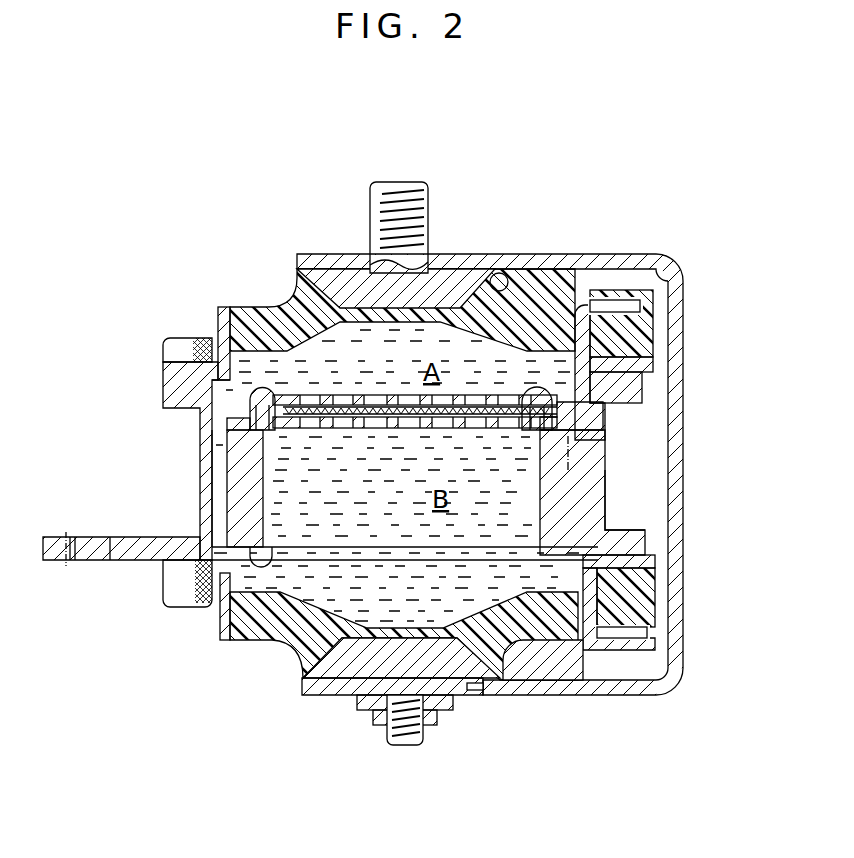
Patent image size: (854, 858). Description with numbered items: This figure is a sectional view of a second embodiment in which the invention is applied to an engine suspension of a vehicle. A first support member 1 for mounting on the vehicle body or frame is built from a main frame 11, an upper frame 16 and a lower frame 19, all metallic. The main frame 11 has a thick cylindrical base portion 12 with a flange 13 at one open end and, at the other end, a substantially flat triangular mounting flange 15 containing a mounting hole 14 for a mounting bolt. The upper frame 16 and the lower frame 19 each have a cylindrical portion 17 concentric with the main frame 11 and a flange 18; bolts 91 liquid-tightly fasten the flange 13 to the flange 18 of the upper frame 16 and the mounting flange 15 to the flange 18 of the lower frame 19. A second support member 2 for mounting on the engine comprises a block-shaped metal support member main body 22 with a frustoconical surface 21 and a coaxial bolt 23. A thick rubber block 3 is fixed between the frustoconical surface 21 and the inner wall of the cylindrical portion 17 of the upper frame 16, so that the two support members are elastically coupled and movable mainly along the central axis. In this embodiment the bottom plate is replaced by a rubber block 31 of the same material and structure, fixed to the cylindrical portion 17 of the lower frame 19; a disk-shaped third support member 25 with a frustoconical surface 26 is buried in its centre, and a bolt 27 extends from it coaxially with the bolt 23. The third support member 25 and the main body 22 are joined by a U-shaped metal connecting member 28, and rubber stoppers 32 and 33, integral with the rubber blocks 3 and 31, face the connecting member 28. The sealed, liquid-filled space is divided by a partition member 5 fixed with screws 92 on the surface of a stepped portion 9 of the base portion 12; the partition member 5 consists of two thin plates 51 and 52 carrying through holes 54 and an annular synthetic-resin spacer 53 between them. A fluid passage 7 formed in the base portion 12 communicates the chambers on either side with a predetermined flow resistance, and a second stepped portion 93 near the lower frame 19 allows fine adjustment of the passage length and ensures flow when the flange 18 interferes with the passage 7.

The first support member 1 is at (190, 441).
The second support member 2 is at (345, 252).
The rubber block 3 is at (258, 302).
The partition member 5 is at (298, 388).
The fluid passage 7 is at (212, 472).
The stepped portion 9 is at (247, 425).
The main frame 11 is at (612, 467).
The cylindrical base portion 12 is at (606, 505).
The flange 13 is at (634, 390).
The mounting hole 14 is at (108, 552).
The mounting flange 15 is at (137, 535).
The upper frame 16 is at (217, 312).
The cylindrical portion 17 is at (580, 310).
The flange 18 is at (633, 365).
The lower frame 19 is at (226, 647).
The frustoconical surface 21 is at (506, 278).
The support member main body 22 is at (447, 272).
The bolt 23 is at (400, 181).
The third support member 25 is at (340, 674).
The frustoconical surface 26 is at (305, 662).
The bolt 27 is at (403, 747).
The connecting member 28 is at (683, 501).
The rubber block 31 is at (537, 630).
The rubber stopper 32 is at (640, 332).
The rubber stopper 33 is at (640, 630).
The plate 51 is at (395, 396).
The plate 52 is at (408, 429).
The spacer 53 is at (598, 404).
The through holes 54 is at (490, 396).
The bolts 91 is at (168, 351).
The screws 92 is at (566, 447).
The second stepped portion 93 is at (262, 555).